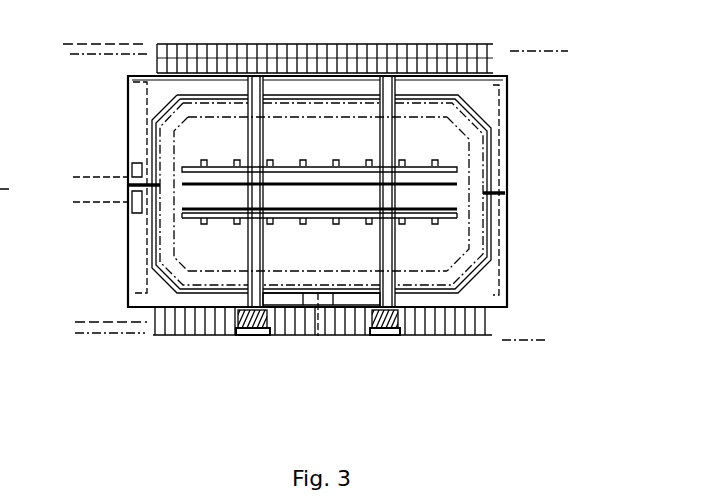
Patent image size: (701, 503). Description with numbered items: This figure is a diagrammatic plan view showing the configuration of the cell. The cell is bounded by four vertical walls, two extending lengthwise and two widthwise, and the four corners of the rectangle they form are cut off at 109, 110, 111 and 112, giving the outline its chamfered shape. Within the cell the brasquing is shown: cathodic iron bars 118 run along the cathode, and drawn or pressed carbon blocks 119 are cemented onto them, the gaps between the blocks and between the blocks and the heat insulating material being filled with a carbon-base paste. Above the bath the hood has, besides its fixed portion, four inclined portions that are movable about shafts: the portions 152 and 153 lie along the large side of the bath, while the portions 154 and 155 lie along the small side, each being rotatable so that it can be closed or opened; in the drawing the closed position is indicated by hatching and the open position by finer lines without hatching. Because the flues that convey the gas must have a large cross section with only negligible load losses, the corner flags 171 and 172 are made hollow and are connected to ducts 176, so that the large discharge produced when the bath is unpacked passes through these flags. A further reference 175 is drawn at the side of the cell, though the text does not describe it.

The cut-off corner 109 is at (163, 108).
The cut-off corner 110 is at (156, 268).
The cut-off corner 111 is at (481, 279).
The cut-off corner 112 is at (483, 111).
The cathodic iron bars 118 is at (438, 160).
The carbon blocks 119 is at (293, 213).
The movable hood portion 152 is at (342, 116).
The movable hood portion 153 is at (335, 272).
The movable hood portion 154 is at (472, 240).
The movable hood portion 155 is at (165, 139).
The corner flag 171 is at (140, 230).
The corner flag 172 is at (493, 150).
The inlet 175 is at (68, 188).
The ducts 176 is at (318, 345).